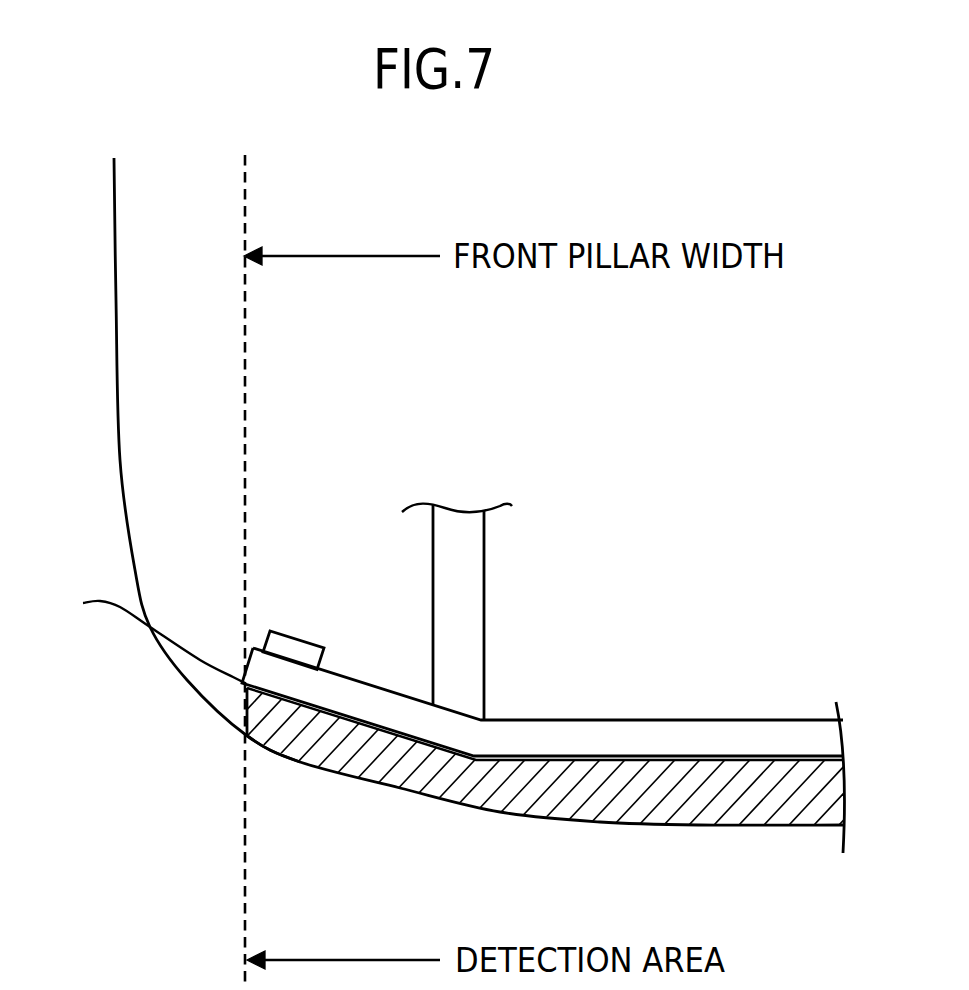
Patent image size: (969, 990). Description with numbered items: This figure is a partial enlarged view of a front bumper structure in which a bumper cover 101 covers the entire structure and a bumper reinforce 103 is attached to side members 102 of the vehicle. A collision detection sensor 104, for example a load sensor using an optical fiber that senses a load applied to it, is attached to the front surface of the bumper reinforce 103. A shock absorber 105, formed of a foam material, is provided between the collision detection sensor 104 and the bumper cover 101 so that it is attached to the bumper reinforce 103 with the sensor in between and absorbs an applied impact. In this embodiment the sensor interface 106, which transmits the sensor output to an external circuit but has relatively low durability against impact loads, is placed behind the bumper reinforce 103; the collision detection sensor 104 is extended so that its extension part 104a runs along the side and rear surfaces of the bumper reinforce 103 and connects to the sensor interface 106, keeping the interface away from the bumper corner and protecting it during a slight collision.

The bumper cover 101 is at (502, 817).
The side members 102 is at (475, 570).
The bumper reinforce 103 is at (372, 700).
The collision detection sensor 104 is at (370, 722).
The extension part 104a is at (130, 638).
The shock absorber 105 is at (262, 745).
The sensor interface 106 is at (295, 632).